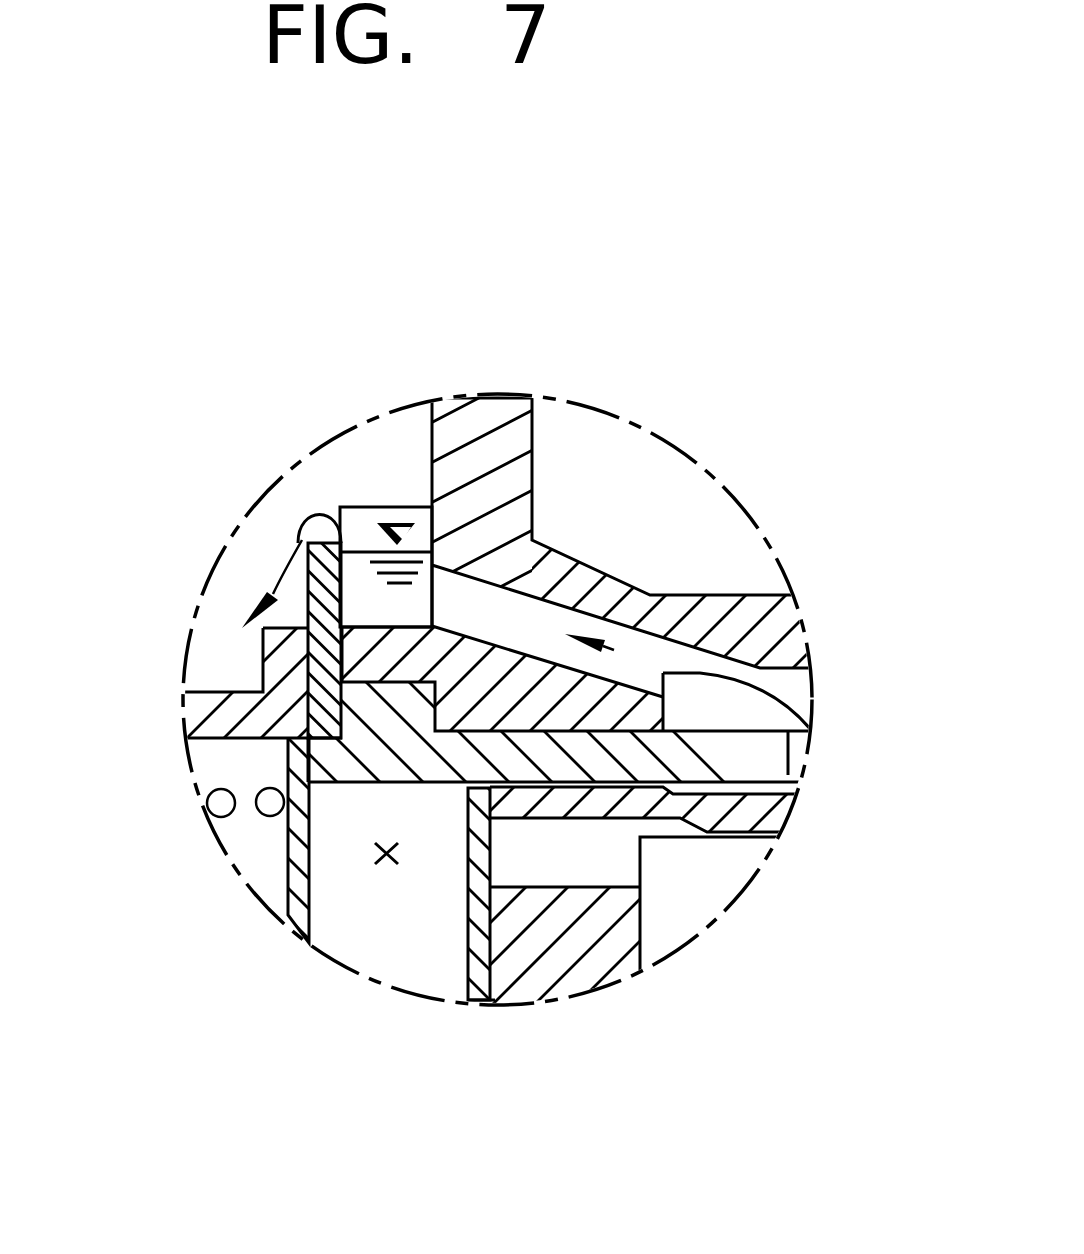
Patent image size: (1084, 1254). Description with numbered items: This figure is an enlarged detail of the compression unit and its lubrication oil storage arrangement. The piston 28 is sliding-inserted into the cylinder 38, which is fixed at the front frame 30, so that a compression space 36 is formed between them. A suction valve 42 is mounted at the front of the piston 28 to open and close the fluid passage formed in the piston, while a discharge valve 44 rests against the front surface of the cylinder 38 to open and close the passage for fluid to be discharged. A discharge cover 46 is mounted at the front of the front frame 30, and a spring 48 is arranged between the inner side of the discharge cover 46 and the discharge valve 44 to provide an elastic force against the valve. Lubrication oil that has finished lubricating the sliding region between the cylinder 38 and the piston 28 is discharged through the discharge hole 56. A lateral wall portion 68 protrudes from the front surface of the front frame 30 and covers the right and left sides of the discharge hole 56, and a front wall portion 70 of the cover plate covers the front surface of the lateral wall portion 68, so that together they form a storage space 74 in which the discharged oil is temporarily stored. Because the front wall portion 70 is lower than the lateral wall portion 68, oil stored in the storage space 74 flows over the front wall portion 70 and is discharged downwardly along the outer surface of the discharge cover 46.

The piston 28 is at (747, 812).
The front frame 30 is at (483, 425).
The compression space 36 is at (378, 855).
The cylinder 38 is at (752, 748).
The suction valve 42 is at (468, 945).
The discharge valve 44 is at (280, 913).
The discharge cover 46 is at (185, 717).
The spring 48 is at (268, 805).
The discharge hole 56 is at (515, 613).
The lateral wall portion 68 is at (413, 507).
The front wall portion 70 is at (305, 530).
The storage space 74 is at (375, 577).